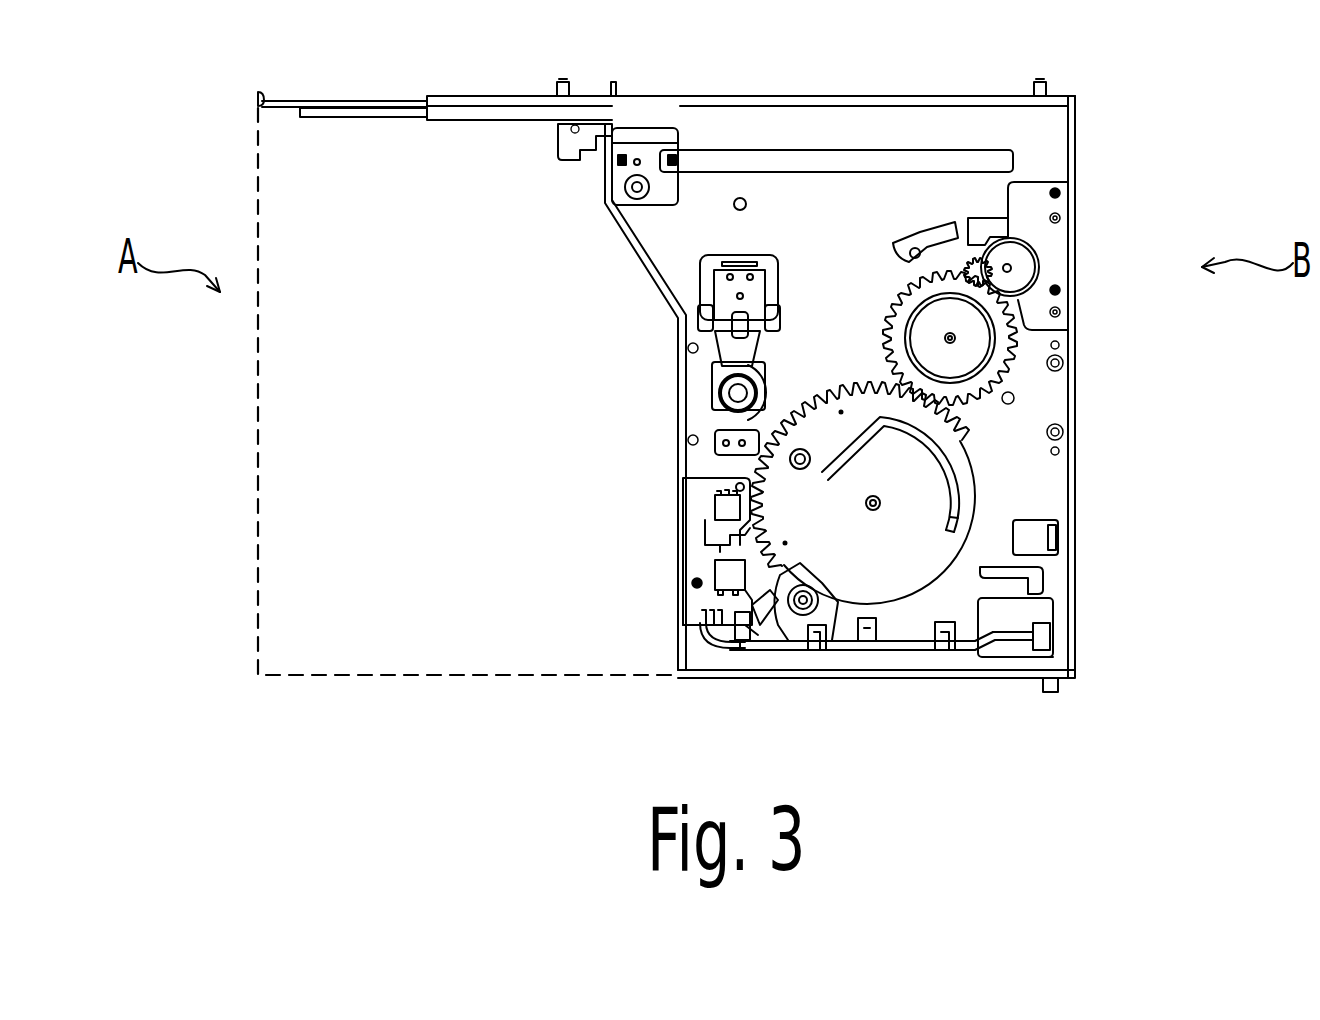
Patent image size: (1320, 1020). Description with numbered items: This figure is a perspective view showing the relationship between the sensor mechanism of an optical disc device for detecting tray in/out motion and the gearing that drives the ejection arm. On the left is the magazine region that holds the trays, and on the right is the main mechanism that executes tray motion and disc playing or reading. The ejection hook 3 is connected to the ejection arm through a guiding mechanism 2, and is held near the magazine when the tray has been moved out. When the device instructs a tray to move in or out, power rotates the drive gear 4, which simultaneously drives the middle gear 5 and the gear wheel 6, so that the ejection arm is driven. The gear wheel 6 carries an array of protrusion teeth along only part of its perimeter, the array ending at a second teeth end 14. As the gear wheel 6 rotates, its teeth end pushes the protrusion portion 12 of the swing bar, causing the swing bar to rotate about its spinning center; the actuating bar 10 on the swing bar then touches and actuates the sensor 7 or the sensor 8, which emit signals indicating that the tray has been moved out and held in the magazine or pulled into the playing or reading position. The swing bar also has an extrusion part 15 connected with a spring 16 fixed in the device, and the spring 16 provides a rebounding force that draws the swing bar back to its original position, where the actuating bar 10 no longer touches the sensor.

The guiding mechanism 2 is at (649, 138).
The ejection hook 3 is at (565, 147).
The drive gear 4 is at (1017, 302).
The middle gear 5 is at (1005, 375).
The gear wheel 6 is at (886, 548).
The sensor 7 is at (727, 572).
The sensor 8 is at (713, 500).
The actuating bar 10 is at (743, 530).
The protrusion portion 12 is at (762, 598).
The second teeth end 14 is at (957, 437).
The extrusion part 15 is at (762, 614).
The spring 16 is at (757, 630).